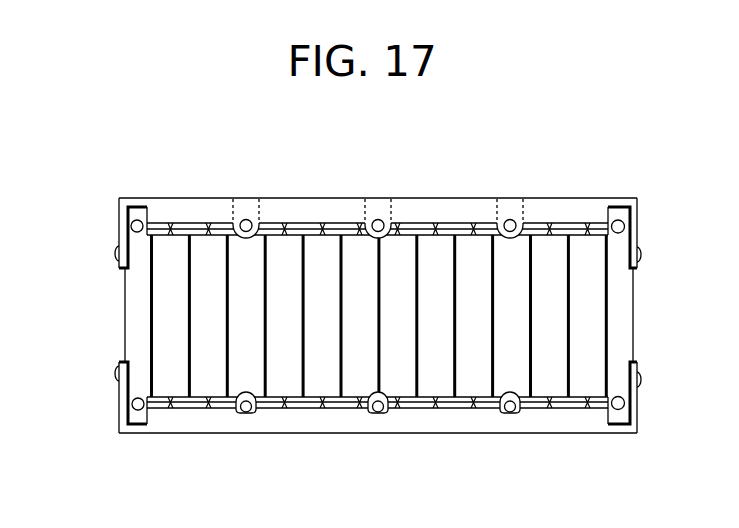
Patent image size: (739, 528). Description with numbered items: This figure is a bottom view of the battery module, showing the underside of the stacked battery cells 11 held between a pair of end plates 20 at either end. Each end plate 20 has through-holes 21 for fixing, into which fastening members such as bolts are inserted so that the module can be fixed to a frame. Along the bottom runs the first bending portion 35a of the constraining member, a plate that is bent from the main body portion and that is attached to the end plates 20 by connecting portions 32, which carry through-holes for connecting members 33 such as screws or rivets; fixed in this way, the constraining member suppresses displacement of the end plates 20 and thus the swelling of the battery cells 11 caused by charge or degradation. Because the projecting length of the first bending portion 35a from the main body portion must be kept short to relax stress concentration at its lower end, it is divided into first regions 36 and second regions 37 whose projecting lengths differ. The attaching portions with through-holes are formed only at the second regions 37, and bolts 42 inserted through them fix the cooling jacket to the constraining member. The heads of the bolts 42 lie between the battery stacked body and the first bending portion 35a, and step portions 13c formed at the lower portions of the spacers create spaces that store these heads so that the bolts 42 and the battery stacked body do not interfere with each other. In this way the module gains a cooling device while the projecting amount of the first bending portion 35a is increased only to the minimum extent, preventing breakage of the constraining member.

The battery cell 11 is at (172, 318).
The step portion 13c is at (302, 405).
The end plate 20 is at (623, 312).
The through-hole 21 is at (128, 221).
The connecting portion 32 is at (635, 402).
The connecting member 33 is at (641, 253).
The first bending portion 35a is at (428, 422).
The first region 36 is at (182, 208).
The second region 37 is at (245, 208).
The bolt 42 is at (247, 410).